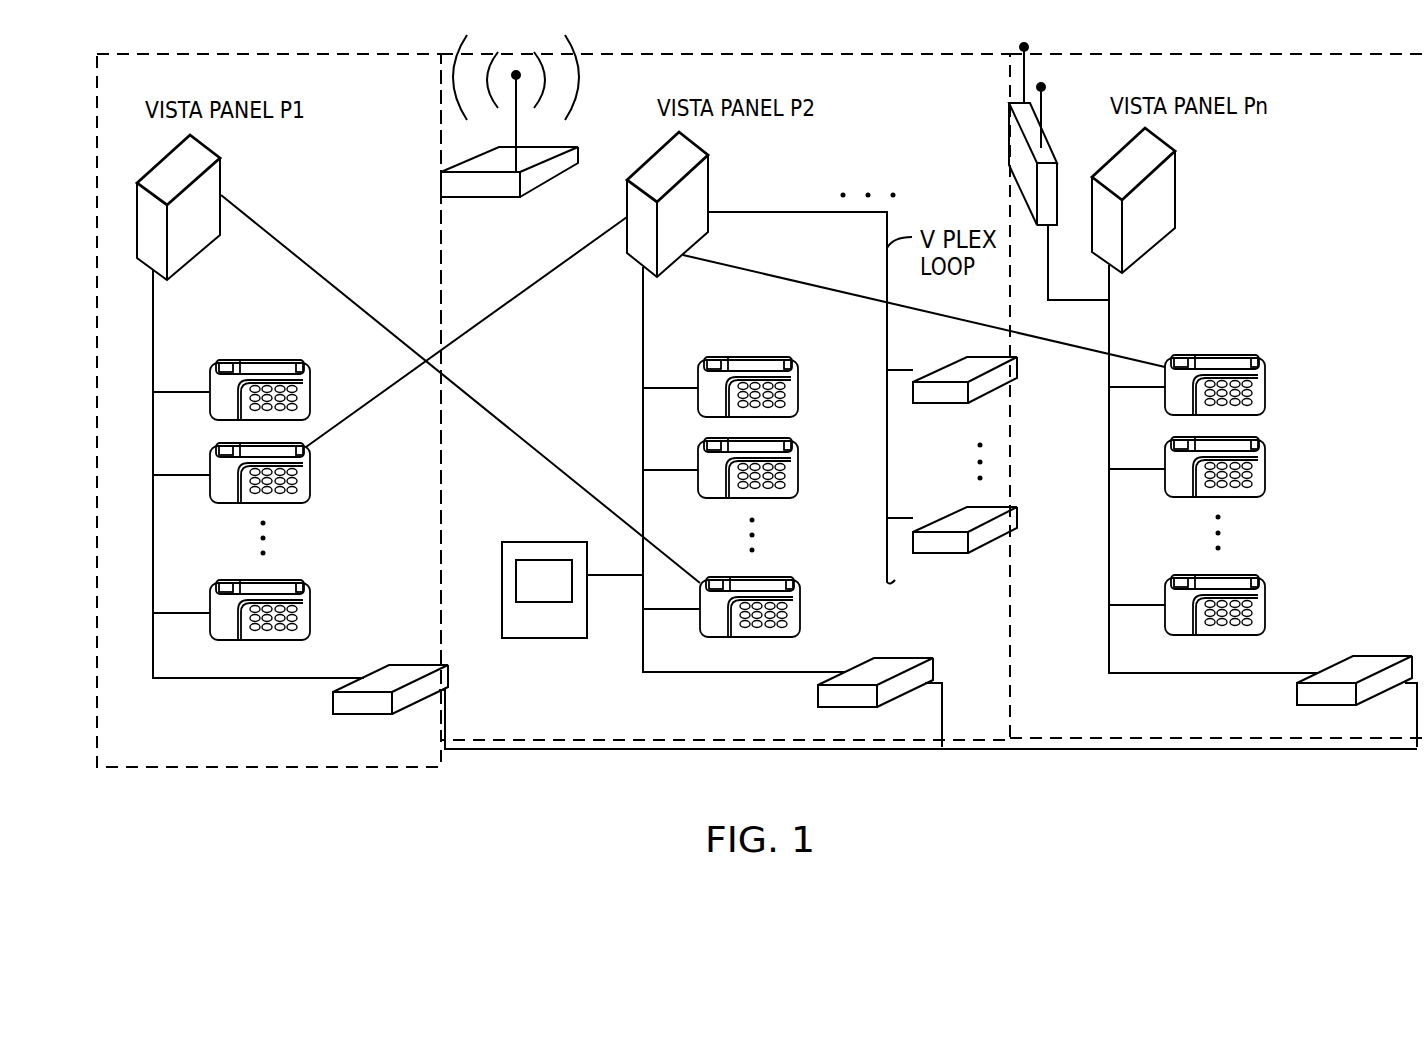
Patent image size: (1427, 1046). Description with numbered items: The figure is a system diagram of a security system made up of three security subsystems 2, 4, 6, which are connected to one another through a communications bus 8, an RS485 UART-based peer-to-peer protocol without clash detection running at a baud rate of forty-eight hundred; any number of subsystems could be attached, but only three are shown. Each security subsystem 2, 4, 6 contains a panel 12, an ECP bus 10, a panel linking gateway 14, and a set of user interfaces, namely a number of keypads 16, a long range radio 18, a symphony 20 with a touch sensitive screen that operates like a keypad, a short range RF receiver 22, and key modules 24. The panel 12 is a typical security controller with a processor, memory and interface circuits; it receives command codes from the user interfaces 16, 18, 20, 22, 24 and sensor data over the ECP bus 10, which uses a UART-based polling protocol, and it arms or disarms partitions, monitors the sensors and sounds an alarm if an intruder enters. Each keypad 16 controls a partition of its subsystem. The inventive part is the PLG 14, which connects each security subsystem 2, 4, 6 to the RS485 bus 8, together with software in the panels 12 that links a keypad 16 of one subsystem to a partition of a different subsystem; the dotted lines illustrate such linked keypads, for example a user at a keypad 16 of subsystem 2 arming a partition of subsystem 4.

The security subsystem 2 is at (269, 410).
The security subsystem 4 is at (725, 397).
The security subsystem 6 is at (1218, 396).
The communications bus 8 is at (538, 742).
The ECP bus 10 is at (153, 322).
The panel 12 is at (221, 170).
The panel linking gateway 14 is at (403, 670).
The keypad 16 is at (306, 390).
The long range radio 18 is at (580, 152).
The symphony 20 is at (518, 640).
The short range RF receiver 22 is at (1050, 157).
The key module 24 is at (968, 367).